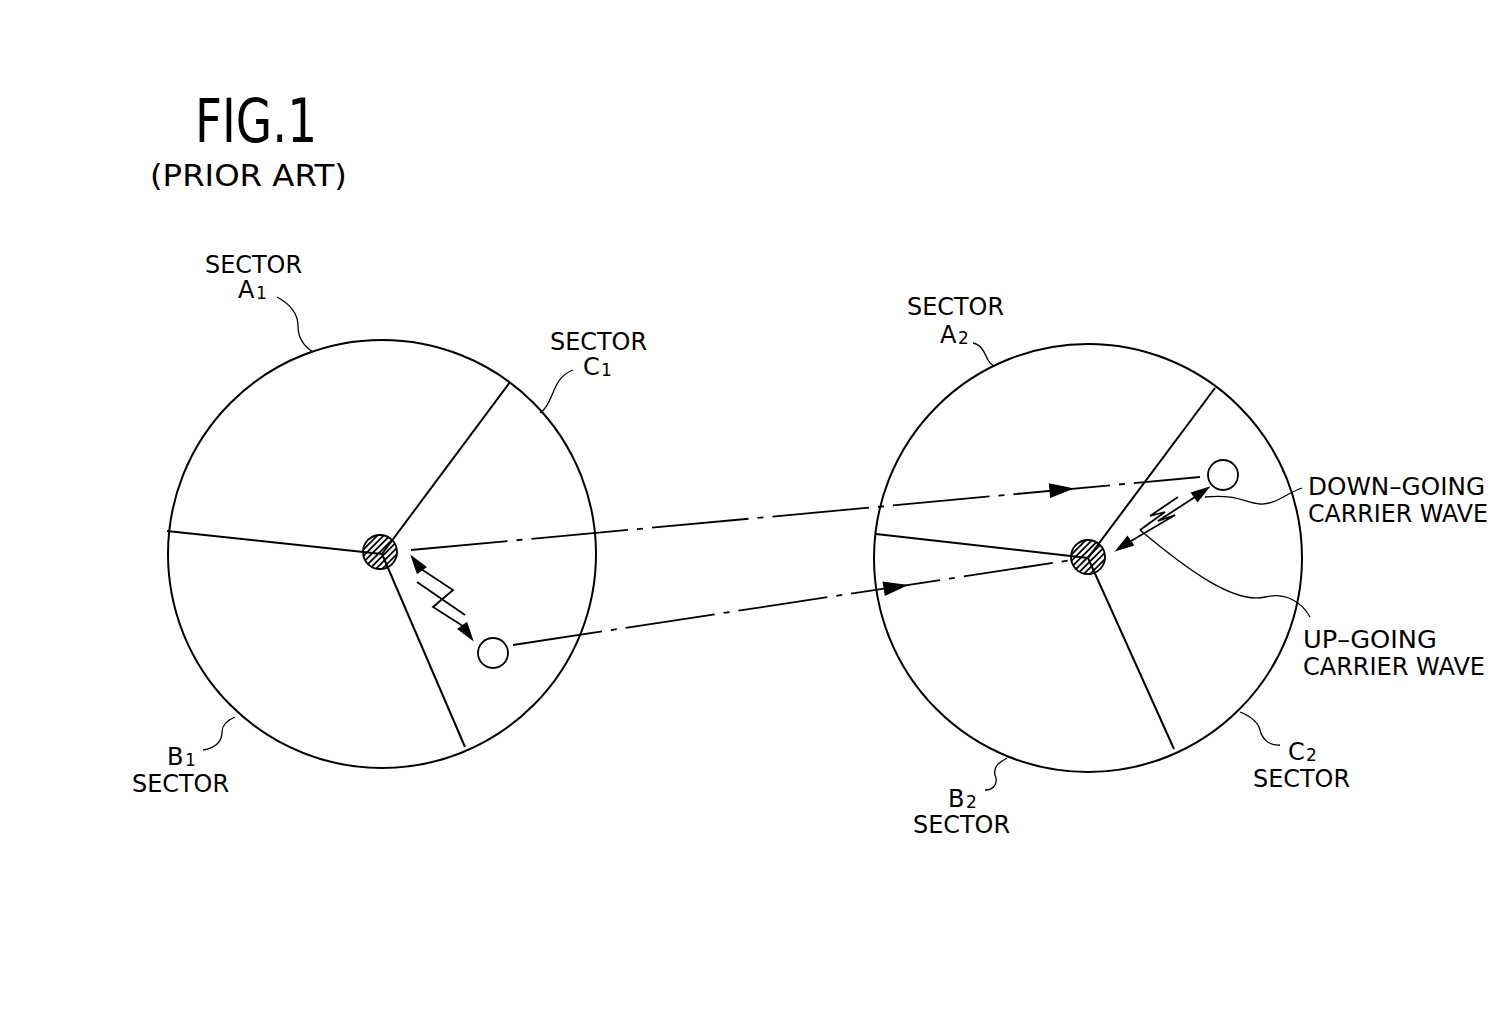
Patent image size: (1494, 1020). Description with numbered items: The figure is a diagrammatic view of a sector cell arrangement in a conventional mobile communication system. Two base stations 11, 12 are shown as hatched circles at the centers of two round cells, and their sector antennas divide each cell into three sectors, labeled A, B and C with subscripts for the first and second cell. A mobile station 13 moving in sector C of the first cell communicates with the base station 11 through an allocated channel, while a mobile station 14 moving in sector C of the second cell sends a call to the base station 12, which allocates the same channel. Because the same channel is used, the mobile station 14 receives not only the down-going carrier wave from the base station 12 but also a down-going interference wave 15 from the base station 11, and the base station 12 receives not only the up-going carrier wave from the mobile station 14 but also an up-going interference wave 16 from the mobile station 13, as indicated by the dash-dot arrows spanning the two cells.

The base station 11 is at (374, 540).
The base station 12 is at (1076, 574).
The mobile station 13 is at (502, 668).
The mobile station 14 is at (1237, 465).
The down-going interference wave 15 is at (708, 523).
The up-going interference wave 16 is at (667, 625).